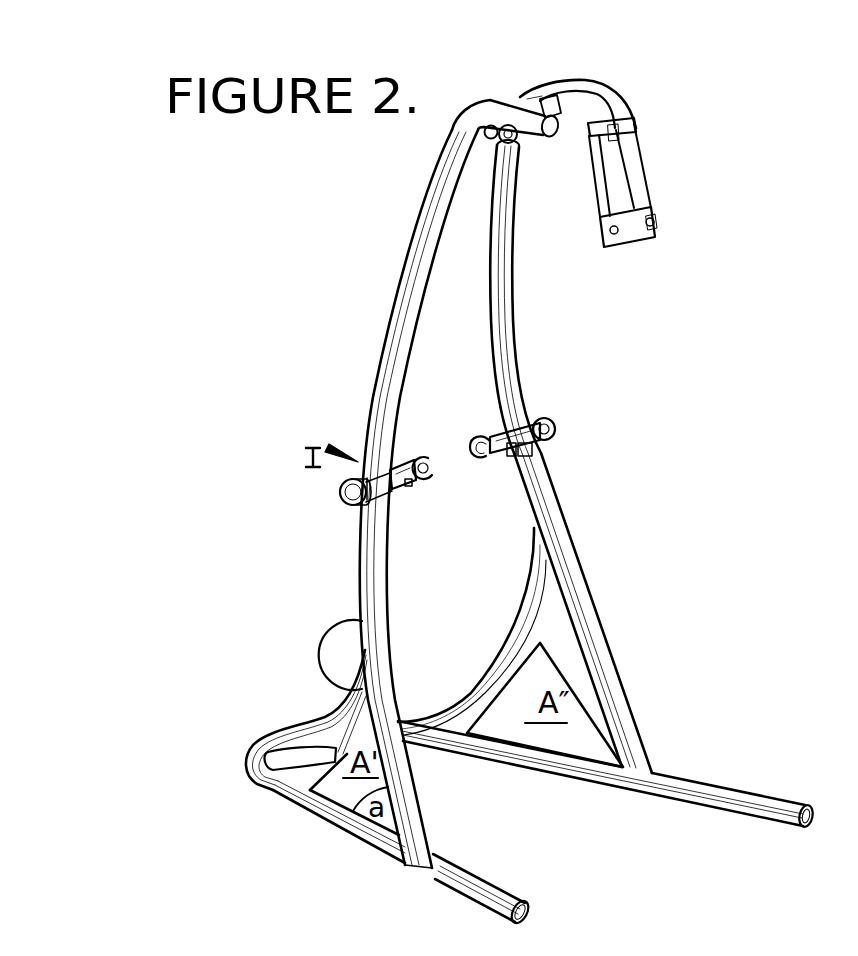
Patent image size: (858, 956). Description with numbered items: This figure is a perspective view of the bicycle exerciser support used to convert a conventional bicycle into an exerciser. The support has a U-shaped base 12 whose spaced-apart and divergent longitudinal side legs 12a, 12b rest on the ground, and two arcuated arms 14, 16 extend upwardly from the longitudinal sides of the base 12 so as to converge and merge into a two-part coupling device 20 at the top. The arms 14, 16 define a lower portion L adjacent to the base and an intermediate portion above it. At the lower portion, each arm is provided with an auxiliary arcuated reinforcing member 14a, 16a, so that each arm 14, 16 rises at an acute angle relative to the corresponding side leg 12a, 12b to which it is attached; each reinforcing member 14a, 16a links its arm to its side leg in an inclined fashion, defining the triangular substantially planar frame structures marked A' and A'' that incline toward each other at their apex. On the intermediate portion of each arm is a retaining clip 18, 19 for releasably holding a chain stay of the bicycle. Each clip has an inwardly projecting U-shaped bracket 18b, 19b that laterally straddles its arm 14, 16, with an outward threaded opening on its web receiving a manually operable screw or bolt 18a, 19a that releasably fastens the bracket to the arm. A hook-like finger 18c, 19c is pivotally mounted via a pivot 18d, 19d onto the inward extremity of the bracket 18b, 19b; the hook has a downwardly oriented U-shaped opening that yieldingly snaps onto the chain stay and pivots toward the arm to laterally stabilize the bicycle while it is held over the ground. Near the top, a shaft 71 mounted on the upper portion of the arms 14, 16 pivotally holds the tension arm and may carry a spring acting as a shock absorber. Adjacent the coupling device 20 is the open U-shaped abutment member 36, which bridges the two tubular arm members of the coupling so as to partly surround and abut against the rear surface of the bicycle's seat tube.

The U-shaped base 12 is at (300, 838).
The longitudinal side leg 12a is at (432, 912).
The longitudinal side leg 12b is at (727, 768).
The arm 14 is at (375, 272).
The auxiliary arcuated reinforcing member 14a is at (300, 720).
The arm 16 is at (532, 278).
The auxiliary arcuated reinforcing member 16a is at (555, 647).
The retaining clip 18 is at (305, 486).
The manually operable screw or bolt 18a is at (306, 511).
The U-shaped bracket 18b is at (410, 528).
The hook-like finger 18c is at (428, 425).
The pivot 18d is at (432, 520).
The retaining clip 19 is at (582, 454).
The manually operable screw or bolt 19a is at (578, 413).
The U-shaped bracket 19b is at (576, 475).
The hook-like finger 19c is at (466, 488).
The pivot 19d is at (577, 492).
The two-part coupling device 20 is at (655, 77).
The open U-shaped abutment member 36 is at (660, 124).
The shaft 71 is at (518, 180).
The lower portion L is at (314, 651).